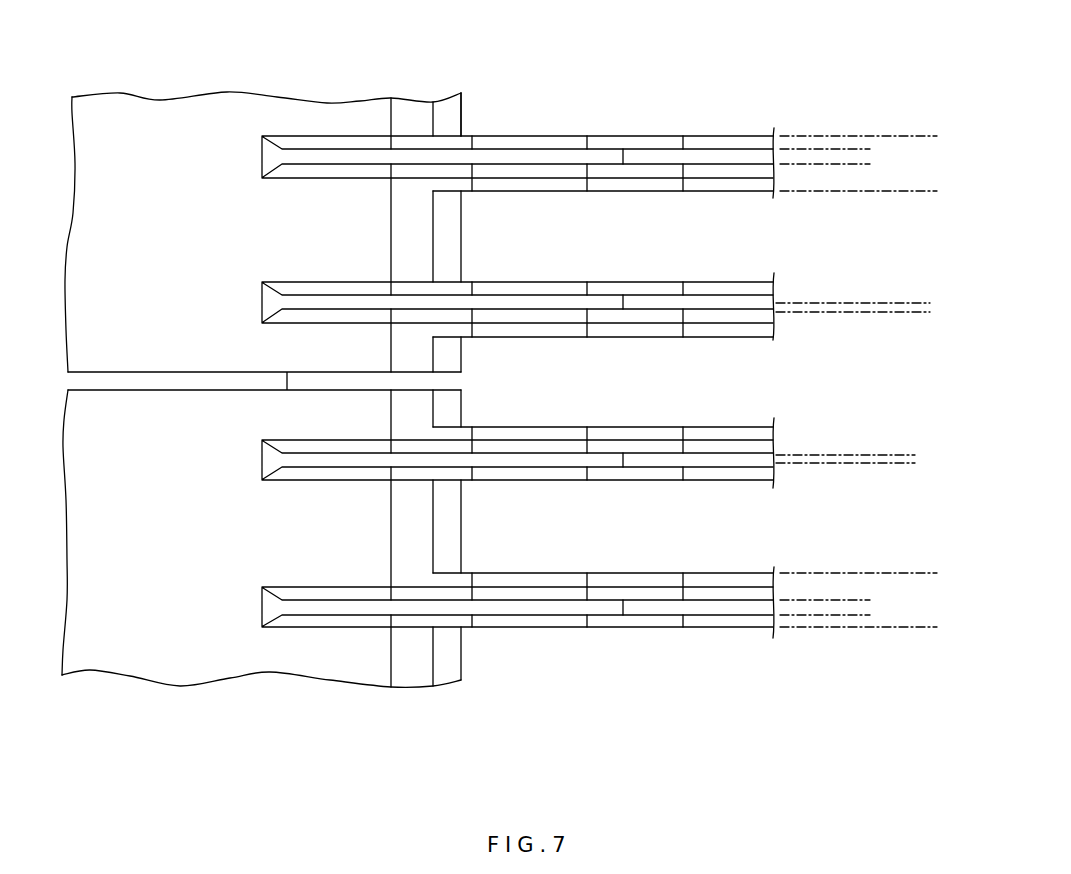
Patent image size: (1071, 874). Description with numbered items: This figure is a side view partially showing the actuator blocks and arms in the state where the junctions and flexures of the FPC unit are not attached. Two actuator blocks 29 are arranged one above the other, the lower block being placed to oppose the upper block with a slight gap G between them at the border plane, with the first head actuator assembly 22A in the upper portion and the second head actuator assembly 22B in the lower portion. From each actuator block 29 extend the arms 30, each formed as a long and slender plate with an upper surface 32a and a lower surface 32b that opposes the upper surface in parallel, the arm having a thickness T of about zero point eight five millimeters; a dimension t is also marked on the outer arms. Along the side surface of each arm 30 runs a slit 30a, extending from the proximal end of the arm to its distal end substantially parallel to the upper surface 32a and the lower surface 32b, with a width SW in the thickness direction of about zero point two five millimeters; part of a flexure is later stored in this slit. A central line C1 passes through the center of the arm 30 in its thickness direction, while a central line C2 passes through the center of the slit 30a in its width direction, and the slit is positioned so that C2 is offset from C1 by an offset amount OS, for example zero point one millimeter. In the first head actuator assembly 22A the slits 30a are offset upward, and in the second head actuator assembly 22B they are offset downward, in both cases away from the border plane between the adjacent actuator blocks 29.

The actuator block 29 is at (188, 122).
The first head actuator assembly 22A is at (390, 86).
The second head actuator assembly 22B is at (488, 690).
The arm 30 is at (675, 136).
The slit 30a is at (513, 152).
The upper surface 32a is at (571, 136).
The lower surface 32b is at (555, 193).
The gap G is at (164, 338).
The slit width SW is at (857, 200).
The arm thickness T is at (916, 136).
The plating thickness t is at (808, 137).
The offset amount OS is at (862, 273).
The central line of the arm C1 is at (920, 313).
The central line of the slit C2 is at (886, 290).